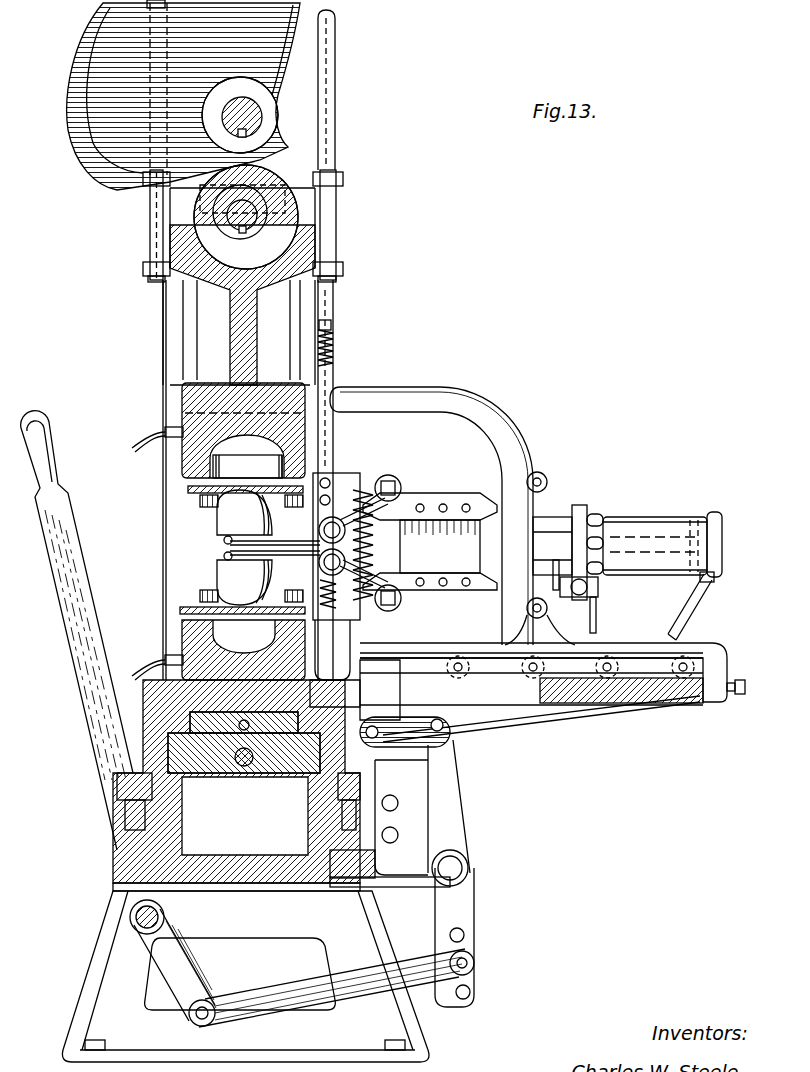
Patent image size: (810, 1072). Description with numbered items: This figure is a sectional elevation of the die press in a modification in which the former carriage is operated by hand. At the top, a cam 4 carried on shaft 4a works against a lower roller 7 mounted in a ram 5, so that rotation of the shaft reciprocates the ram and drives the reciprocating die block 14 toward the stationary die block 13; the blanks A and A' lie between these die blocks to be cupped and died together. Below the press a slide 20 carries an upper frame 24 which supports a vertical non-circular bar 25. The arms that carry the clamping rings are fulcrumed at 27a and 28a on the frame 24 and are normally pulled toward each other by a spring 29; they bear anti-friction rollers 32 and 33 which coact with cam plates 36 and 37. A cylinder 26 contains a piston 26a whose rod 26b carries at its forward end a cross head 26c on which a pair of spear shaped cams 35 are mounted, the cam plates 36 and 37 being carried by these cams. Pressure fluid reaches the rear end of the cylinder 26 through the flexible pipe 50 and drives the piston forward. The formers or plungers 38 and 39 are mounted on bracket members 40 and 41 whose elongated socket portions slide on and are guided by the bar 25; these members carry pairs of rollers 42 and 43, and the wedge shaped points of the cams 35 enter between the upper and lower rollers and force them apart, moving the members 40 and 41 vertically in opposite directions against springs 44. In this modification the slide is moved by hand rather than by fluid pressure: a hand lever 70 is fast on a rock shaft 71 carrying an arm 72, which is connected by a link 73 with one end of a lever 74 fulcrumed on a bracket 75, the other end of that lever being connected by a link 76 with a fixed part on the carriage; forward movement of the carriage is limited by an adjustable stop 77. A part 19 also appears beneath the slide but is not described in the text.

The cam 4 is at (288, 37).
The shaft 4a is at (262, 118).
The lower roller 7 is at (298, 215).
The ram 5 is at (278, 327).
The springs 44 is at (334, 356).
The reciprocating die block 14 is at (192, 420).
The blank A' is at (217, 493).
The former 39 is at (233, 520).
The anti-friction rollers 43 is at (320, 524).
The bracket arm 41 is at (284, 553).
The former 38 is at (232, 572).
The bracket arm 40 is at (284, 543).
The anti-friction rollers 42 is at (320, 585).
The blank A is at (220, 593).
The hand lever 70 is at (90, 642).
The stationary die block 13 is at (232, 658).
The vertical non-circular bar 25 is at (341, 452).
The anti-friction roller 33 is at (390, 480).
The cam plate 37 is at (428, 497).
The spring 29 is at (376, 545).
The spear shaped cams 35 is at (440, 546).
The anti-friction roller 32 is at (389, 611).
The cam plate 36 is at (436, 593).
The upper frame 24 is at (508, 428).
The fulcrum 28a is at (540, 474).
The cross head 26c is at (569, 537).
The piston rod 26b is at (617, 537).
The cylinder 26 is at (645, 518).
The piston 26a is at (705, 514).
The fulcrum 27a is at (600, 605).
The flexible pipe 50 is at (682, 618).
The slide 20 is at (685, 645).
The wedge 19 is at (575, 698).
The adjustable stop 77 is at (705, 692).
The link 76 is at (410, 742).
The bracket 75 is at (400, 813).
The lever 74 is at (462, 895).
The rock shaft 71 is at (130, 917).
The arm 72 is at (197, 990).
The link 73 is at (282, 997).